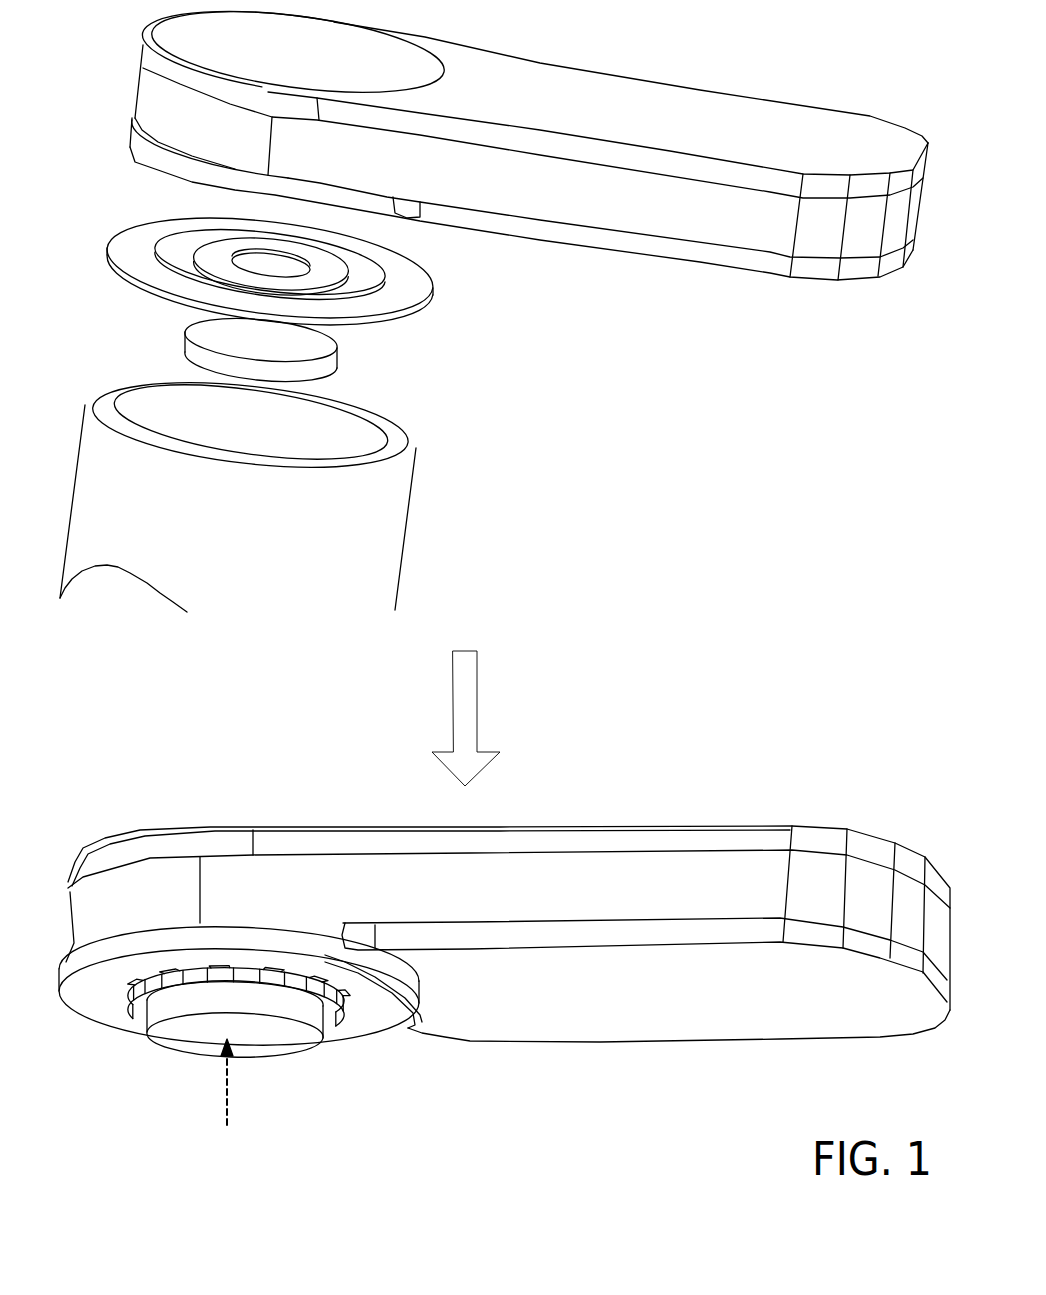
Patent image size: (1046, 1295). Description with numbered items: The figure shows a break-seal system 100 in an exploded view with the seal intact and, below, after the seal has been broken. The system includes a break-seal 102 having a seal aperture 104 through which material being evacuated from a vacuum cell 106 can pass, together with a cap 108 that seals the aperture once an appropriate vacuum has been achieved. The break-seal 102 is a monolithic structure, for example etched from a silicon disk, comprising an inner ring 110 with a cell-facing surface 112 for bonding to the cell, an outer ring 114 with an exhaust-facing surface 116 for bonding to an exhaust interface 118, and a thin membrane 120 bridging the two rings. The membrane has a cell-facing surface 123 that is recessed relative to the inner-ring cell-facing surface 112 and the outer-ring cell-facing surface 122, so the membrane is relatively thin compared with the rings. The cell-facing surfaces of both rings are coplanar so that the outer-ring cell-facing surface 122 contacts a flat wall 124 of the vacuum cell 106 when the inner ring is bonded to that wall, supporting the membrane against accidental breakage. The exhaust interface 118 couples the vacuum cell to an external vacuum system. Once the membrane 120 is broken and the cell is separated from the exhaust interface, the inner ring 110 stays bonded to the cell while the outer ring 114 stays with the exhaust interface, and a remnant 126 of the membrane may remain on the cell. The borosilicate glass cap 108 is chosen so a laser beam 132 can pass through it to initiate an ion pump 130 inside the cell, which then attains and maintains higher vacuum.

The break-seal system 100 is at (582, 389).
The break-seal 102 is at (478, 295).
The seal aperture 104 is at (263, 262).
The vacuum cell 106 is at (550, 104).
The cap 108 is at (283, 355).
The inner ring 110 is at (353, 278).
The cell-facing surface 112 is at (211, 258).
The outer ring 114 is at (130, 277).
The exhaust-facing surface 116 is at (162, 292).
The exhaust interface 118 is at (277, 527).
The membrane 120 is at (155, 255).
The cell-facing surface 122 is at (157, 256).
The cell-facing surface 123 is at (363, 275).
The wall 124 is at (92, 990).
The remnant 126 is at (330, 1010).
The ion pump 130 is at (262, 69).
The laser beam 132 is at (245, 1083).